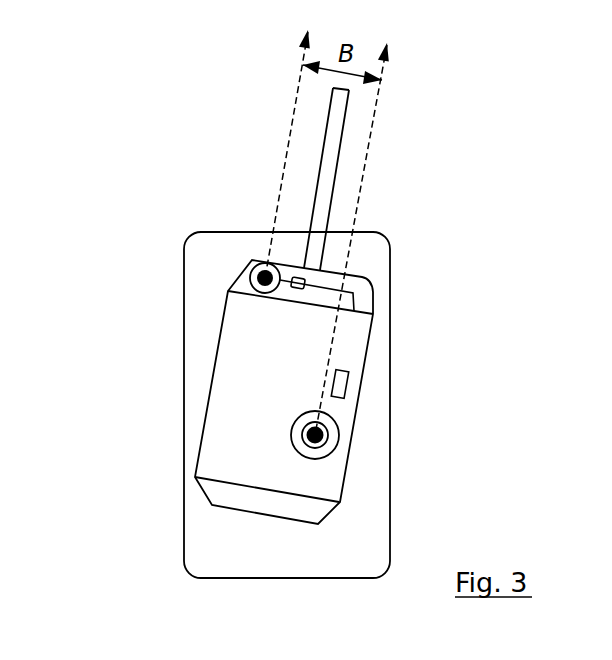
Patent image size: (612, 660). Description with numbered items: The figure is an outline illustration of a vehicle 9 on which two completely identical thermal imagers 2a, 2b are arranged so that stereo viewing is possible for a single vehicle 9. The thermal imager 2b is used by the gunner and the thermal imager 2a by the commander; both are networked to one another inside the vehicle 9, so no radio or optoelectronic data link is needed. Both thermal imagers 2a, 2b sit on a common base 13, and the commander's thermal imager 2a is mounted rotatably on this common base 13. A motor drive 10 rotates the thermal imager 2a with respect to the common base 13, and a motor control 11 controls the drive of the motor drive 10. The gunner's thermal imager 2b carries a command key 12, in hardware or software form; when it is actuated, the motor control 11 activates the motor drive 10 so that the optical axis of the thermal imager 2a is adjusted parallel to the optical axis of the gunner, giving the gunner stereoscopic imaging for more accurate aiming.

The thermal imager 2a is at (292, 432).
The thermal imager 2b is at (250, 278).
The vehicle 9 is at (203, 546).
The motor drive 10 is at (337, 427).
The motor control 11 is at (350, 372).
The command key 12 is at (305, 282).
The common base 13 is at (328, 482).